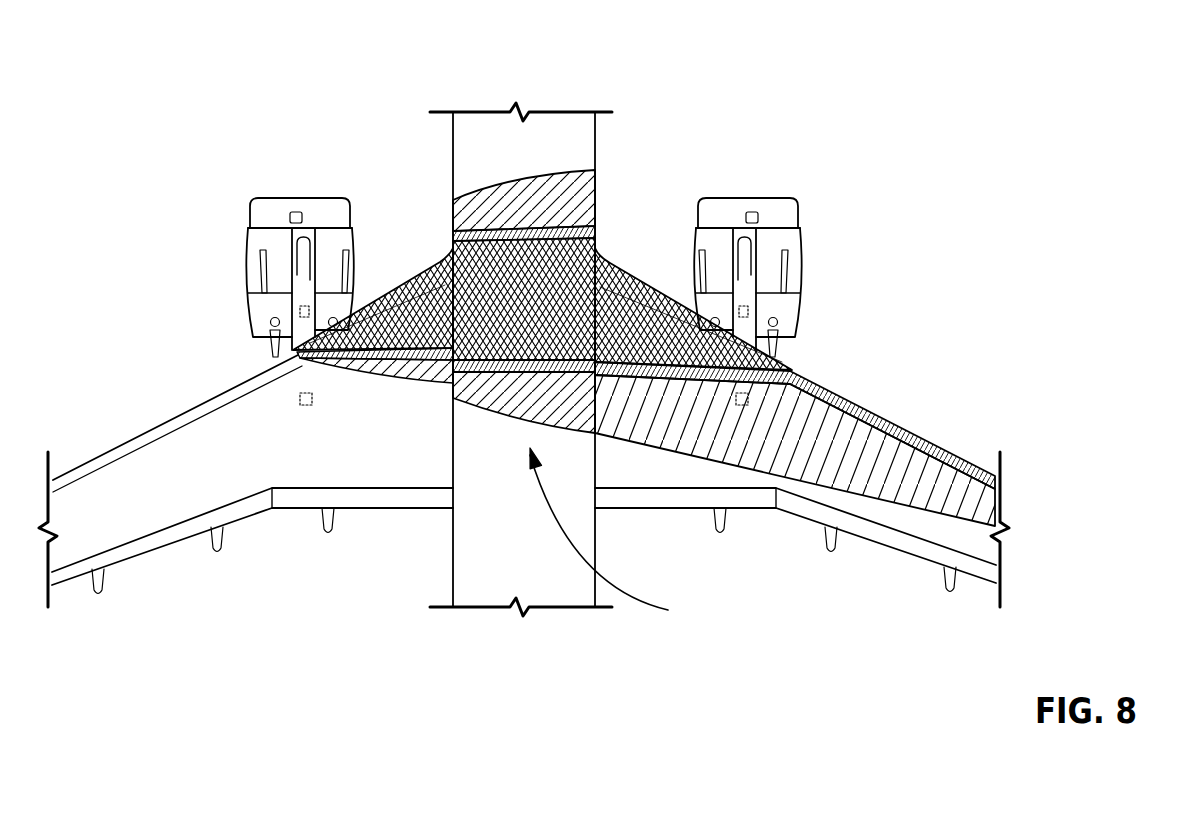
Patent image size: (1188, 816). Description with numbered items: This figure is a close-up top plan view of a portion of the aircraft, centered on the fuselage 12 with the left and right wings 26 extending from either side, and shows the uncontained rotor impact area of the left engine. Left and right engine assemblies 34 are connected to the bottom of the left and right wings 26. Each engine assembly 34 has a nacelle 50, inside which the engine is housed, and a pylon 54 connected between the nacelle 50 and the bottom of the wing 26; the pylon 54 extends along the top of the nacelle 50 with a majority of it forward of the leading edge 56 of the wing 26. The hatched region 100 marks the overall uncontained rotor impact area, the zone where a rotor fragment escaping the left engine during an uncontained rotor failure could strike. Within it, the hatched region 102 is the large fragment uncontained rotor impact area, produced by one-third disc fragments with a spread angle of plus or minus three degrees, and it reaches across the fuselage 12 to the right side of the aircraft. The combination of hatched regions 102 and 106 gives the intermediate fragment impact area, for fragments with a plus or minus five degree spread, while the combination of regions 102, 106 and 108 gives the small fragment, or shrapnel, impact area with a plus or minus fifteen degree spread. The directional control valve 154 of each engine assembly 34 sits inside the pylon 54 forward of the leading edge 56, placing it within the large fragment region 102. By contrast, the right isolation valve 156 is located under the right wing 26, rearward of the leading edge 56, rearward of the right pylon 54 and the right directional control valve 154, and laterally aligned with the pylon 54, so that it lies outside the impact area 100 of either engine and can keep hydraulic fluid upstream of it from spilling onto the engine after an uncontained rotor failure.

The fuselage 12 is at (462, 162).
The wing 26 is at (190, 510).
The engine assembly 34 is at (233, 158).
The nacelle 50 is at (262, 217).
The pylon 54 is at (302, 266).
The leading edge 56 is at (167, 417).
The uncontained rotor impact area 100 is at (631, 535).
The large fragment uncontained rotor impact area 102 is at (603, 282).
The intermediate fragment impact region 106 is at (592, 233).
The small fragment impact region 108 is at (590, 184).
The directional control valve 154 is at (295, 311).
The isolation valve 156 is at (300, 400).